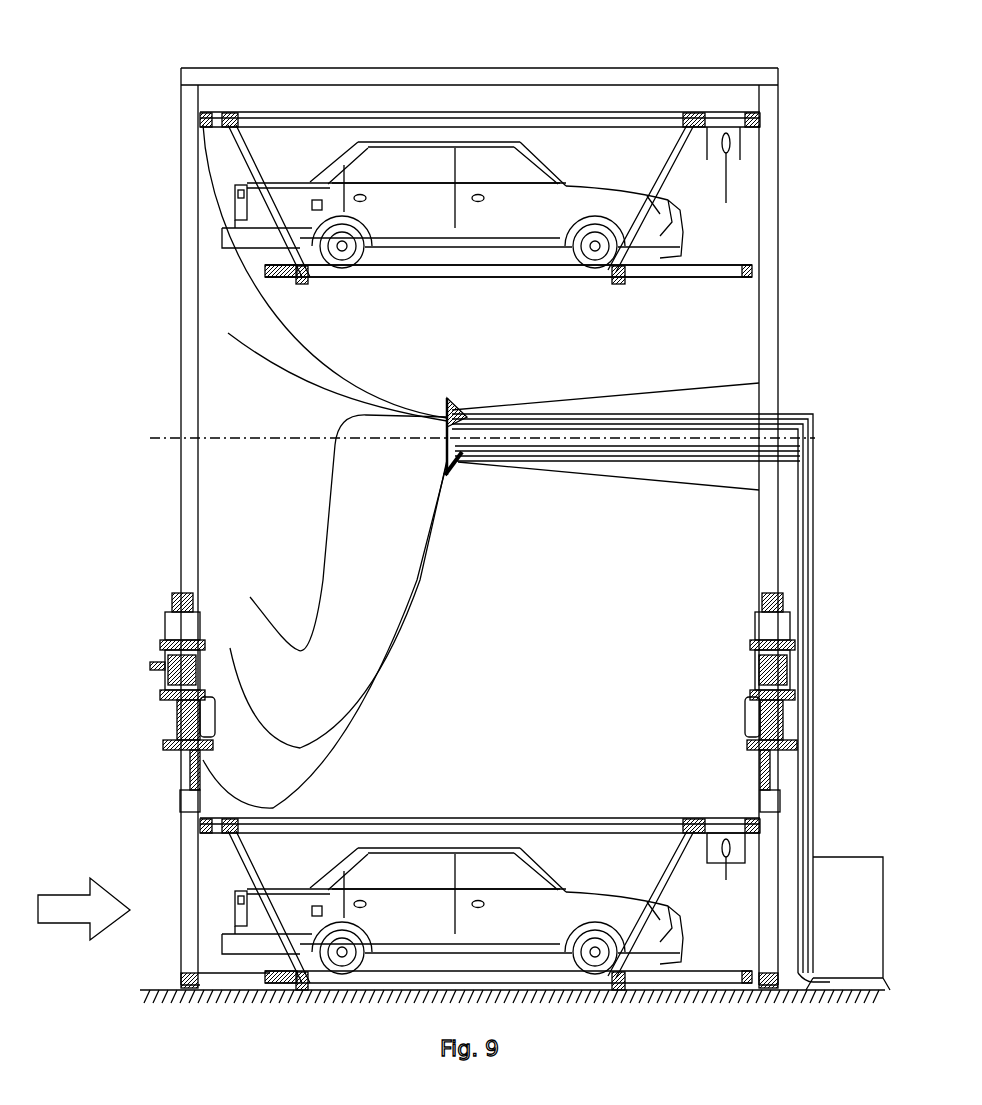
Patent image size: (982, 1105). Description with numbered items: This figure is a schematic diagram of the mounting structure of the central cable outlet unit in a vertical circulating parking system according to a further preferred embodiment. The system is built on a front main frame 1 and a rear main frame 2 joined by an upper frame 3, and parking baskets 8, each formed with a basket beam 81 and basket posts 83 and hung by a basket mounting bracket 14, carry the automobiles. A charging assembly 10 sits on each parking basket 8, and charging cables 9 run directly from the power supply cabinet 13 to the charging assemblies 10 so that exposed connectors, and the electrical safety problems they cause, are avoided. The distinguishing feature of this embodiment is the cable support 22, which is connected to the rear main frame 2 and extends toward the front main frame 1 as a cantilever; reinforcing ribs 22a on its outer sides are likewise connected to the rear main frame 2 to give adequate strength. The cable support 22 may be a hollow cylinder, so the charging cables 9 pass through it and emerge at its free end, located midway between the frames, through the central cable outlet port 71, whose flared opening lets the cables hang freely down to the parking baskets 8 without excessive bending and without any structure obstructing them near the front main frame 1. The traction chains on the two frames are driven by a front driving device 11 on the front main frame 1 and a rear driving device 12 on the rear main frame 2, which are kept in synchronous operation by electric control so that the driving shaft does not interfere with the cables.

The front main frame 1 is at (190, 268).
The rear main frame 2 is at (767, 290).
The upper frame 3 is at (255, 77).
The parking basket 8 is at (655, 265).
The charging cable 9 is at (203, 163).
The charging assembly 10 is at (745, 140).
The front driving device 11 is at (170, 640).
The rear driving device 12 is at (793, 650).
The power supply cabinet 13 is at (858, 930).
The basket mounting bracket 14 is at (180, 776).
The cable support 22 is at (650, 412).
The reinforcing rib 22a is at (735, 403).
The central cable outlet port 71 is at (455, 400).
The basket beam 81 is at (410, 112).
The basket post 83 is at (245, 150).